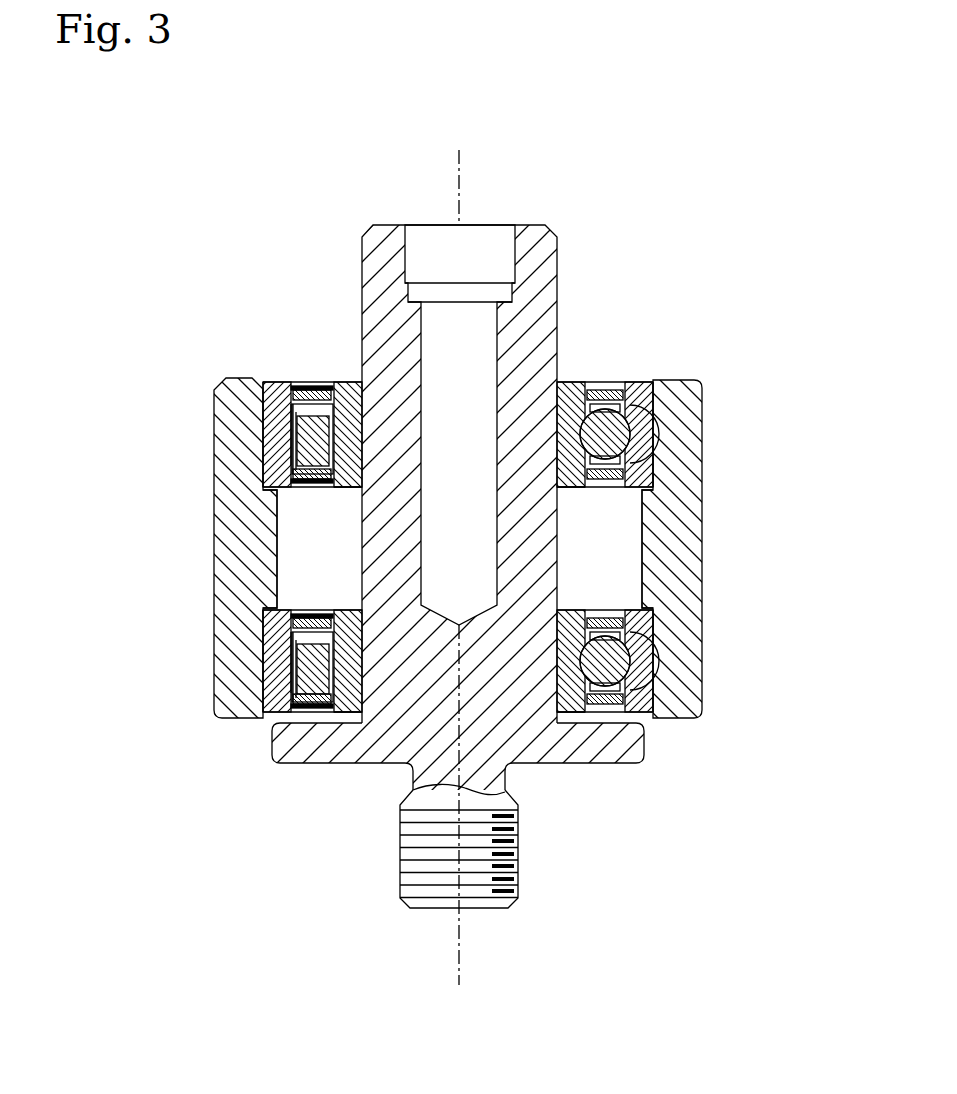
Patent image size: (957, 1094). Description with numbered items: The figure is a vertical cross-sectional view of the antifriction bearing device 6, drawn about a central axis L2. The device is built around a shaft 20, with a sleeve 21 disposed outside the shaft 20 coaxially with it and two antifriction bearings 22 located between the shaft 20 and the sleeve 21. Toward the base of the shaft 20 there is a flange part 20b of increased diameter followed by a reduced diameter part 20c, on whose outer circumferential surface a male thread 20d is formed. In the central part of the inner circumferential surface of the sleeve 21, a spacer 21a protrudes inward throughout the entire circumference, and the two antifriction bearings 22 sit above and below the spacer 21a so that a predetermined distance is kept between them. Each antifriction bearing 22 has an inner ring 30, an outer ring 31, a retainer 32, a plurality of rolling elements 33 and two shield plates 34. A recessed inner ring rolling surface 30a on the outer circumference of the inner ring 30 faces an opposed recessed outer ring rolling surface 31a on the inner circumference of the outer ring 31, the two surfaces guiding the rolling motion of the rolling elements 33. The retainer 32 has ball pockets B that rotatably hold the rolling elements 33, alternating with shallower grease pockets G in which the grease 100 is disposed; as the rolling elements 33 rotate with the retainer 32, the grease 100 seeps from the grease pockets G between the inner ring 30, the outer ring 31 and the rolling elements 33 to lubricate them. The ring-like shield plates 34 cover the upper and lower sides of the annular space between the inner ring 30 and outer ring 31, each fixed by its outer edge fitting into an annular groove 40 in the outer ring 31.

The antifriction bearing device 6 is at (676, 150).
The shaft 20 is at (530, 230).
The flange part 20b is at (640, 744).
The reduced diameter part 20c is at (430, 910).
The male thread 20d is at (484, 888).
The sleeve 21 is at (677, 383).
The spacer 21a is at (647, 548).
The antifriction bearing 22 is at (658, 407).
The inner ring 30 is at (571, 385).
The inner ring rolling surface 30a is at (330, 489).
The outer ring 31 is at (640, 440).
The outer ring rolling surface 31a is at (633, 390).
The retainer 32 is at (305, 466).
The rolling element 33 is at (337, 404).
The shield plate 34 is at (303, 392).
The annular groove 40 is at (286, 390).
The ball pocket B is at (608, 412).
The grease pocket G is at (290, 408).
The grease 100 is at (296, 416).
The axis L2 is at (464, 158).